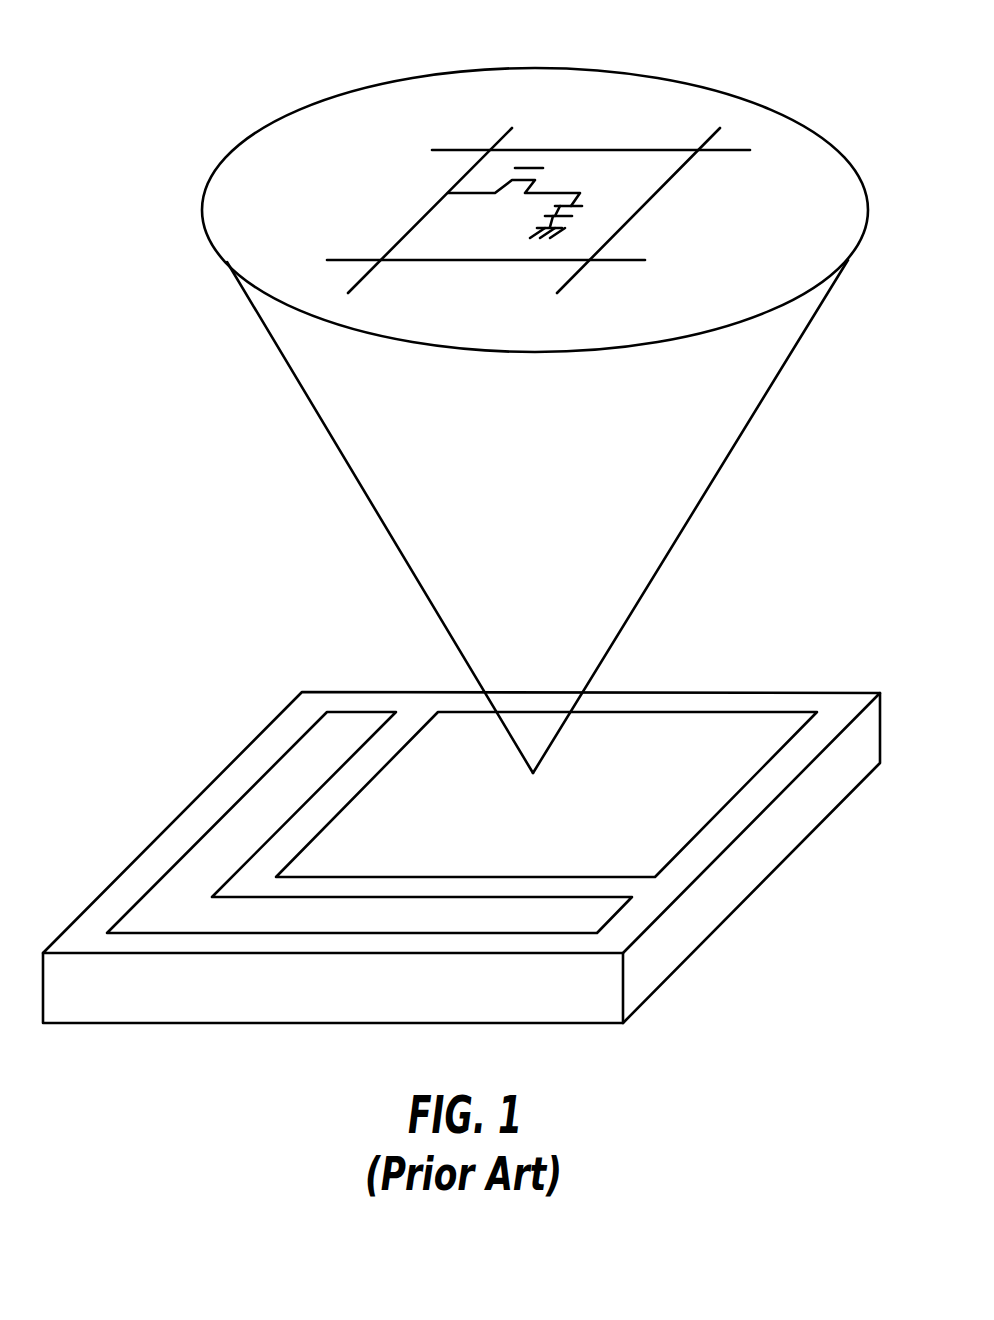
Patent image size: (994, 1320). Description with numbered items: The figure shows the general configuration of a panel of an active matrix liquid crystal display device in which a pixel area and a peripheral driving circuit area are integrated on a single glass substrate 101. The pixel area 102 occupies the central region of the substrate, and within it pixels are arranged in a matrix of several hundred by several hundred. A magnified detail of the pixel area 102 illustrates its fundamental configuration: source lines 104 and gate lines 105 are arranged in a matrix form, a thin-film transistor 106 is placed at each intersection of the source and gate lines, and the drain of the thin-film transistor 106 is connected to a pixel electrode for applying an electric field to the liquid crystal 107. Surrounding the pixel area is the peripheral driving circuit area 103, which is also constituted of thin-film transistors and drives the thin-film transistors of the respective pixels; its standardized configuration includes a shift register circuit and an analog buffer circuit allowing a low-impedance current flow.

The glass substrate 101 is at (461, 857).
The pixel area 102 is at (546, 753).
The peripheral driving circuit area 103 is at (369, 819).
The source line 104 is at (430, 195).
The gate line 105 is at (678, 171).
The thin-film transistor 106 is at (553, 154).
The liquid crystal 107 is at (583, 207).